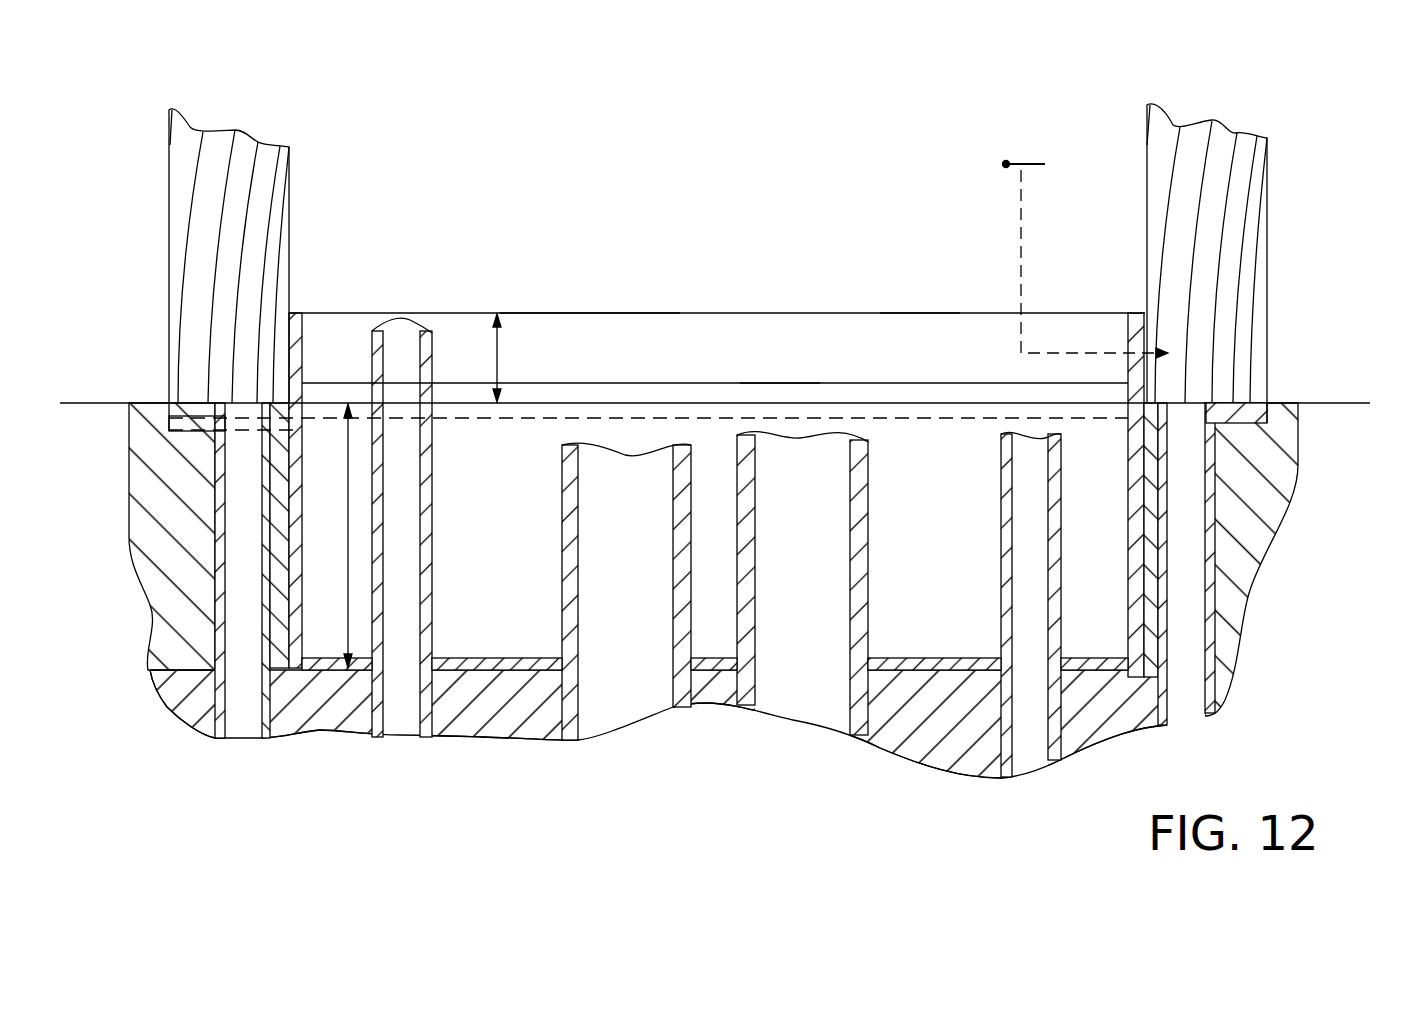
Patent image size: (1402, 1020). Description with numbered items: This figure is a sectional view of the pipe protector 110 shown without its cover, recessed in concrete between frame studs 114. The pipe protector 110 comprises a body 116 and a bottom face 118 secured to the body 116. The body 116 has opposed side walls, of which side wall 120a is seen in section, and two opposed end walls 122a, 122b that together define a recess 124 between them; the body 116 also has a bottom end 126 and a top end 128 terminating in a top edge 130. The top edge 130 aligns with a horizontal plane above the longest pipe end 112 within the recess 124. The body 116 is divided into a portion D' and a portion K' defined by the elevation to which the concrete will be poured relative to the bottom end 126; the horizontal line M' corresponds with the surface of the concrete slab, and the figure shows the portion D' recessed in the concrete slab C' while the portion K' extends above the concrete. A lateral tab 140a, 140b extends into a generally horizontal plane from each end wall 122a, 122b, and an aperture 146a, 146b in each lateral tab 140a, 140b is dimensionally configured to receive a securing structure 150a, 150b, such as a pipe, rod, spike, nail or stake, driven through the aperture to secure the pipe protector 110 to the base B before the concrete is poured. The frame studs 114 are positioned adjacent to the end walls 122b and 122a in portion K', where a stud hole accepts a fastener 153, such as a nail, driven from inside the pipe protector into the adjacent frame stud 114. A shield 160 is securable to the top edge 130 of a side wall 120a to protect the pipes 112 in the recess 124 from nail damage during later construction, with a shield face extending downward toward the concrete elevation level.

The pipe protector 110 is at (728, 250).
The pipe end 112 is at (398, 708).
The frame stud 114 is at (1228, 262).
The body 116 is at (540, 308).
The bottom face 118 is at (490, 665).
The side wall 120a is at (920, 313).
The end wall 122a is at (1135, 338).
The end wall 122b is at (297, 312).
The recess 124 is at (918, 620).
The bottom end 126 is at (292, 668).
The top end 128 is at (673, 313).
The top edge 130 is at (608, 313).
The lateral tab 140a is at (1233, 403).
The lateral tab 140b is at (168, 420).
The aperture 146a is at (1233, 420).
The aperture 146b is at (222, 425).
The securing structure 150a is at (1187, 700).
The securing structure 150b is at (240, 715).
The fastener 153 is at (1010, 160).
The shield 160 is at (772, 340).
The base B is at (1100, 717).
The concrete slab C' is at (748, 559).
The portion D' is at (419, 536).
The portion K' is at (473, 331).
The horizontal line M' is at (715, 429).